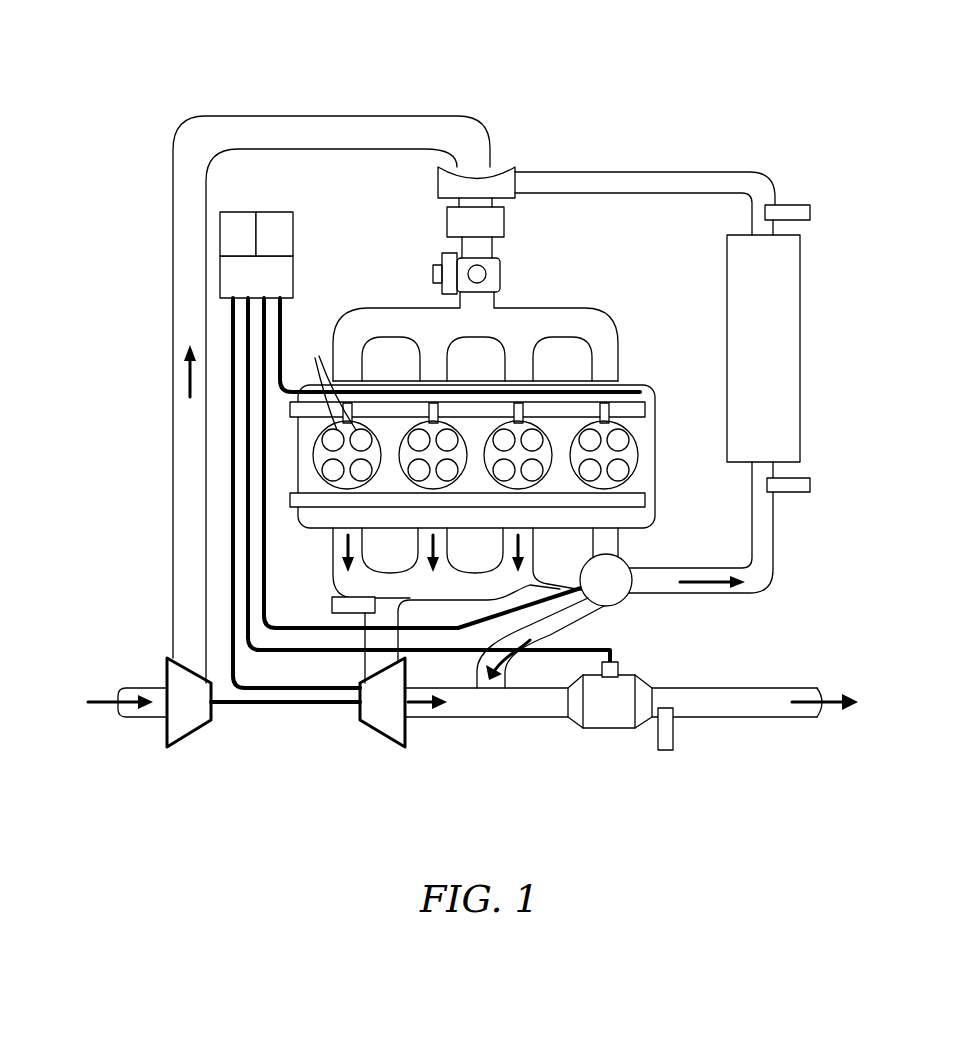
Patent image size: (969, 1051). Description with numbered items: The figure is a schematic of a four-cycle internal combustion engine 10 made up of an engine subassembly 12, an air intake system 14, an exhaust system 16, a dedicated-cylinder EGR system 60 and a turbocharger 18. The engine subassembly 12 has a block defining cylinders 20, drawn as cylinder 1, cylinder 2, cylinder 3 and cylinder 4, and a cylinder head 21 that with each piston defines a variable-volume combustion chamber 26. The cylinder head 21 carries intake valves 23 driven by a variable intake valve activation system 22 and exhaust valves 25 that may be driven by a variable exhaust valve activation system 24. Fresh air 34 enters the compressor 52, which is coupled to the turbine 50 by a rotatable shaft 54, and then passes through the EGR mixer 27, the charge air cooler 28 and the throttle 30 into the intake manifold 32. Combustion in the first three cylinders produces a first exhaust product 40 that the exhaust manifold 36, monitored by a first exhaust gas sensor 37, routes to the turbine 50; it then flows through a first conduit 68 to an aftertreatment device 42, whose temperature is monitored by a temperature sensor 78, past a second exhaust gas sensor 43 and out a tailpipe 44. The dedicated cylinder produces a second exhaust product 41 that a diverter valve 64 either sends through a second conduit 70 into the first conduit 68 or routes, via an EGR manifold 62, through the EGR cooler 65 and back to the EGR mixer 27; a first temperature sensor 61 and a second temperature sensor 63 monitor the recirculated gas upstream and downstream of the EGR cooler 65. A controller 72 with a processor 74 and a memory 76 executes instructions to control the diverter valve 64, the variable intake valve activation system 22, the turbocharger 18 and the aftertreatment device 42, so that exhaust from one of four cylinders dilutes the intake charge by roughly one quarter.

The cylinder 1 is at (366, 431).
The cylinder 2 is at (451, 431).
The cylinder 3 is at (537, 431).
The cylinder 4 is at (622, 431).
The internal combustion engine 10 is at (125, 68).
The engine subassembly 12 is at (432, 449).
The air intake system 14 is at (158, 138).
The exhaust system 16 is at (613, 739).
The turbocharger 18 is at (285, 735).
The cylinders 20 is at (362, 481).
The cylinder head 21 is at (660, 459).
The variable intake valve activation system 22 is at (283, 395).
The intake valves 23 is at (331, 384).
The variable exhaust valve activation system 24 is at (147, 718).
The exhaust valves 25 is at (336, 481).
The variable-volume combustion chamber 26 is at (305, 450).
The EGR mixer 27 is at (508, 167).
The charge air cooler 28 is at (505, 222).
The throttle 30 is at (501, 275).
The intake manifold 32 is at (592, 310).
The fresh air 34 is at (172, 370).
The exhaust manifold 36 is at (322, 675).
The first exhaust gas sensor 37 is at (345, 612).
The first exhaust product 40 is at (512, 585).
The second exhaust product 41 is at (707, 568).
The aftertreatment device 42 is at (612, 729).
The second exhaust gas sensor 43 is at (674, 735).
The tailpipe 44 is at (780, 718).
The turbine 50 is at (373, 733).
The compressor 52 is at (196, 733).
The rotatable shaft 54 is at (243, 705).
The dedicated-cylinder EGR system 60 is at (677, 451).
The first temperature sensor 61 is at (790, 493).
The EGR manifold 62 is at (620, 548).
The second temperature sensor 63 is at (790, 205).
The diverter valve 64 is at (650, 585).
The EGR cooler 65 is at (801, 282).
The first conduit 68 is at (413, 718).
The second conduit 70 is at (513, 668).
The controller 72 is at (256, 255).
The processor 74 is at (247, 248).
The memory 76 is at (283, 248).
The temperature sensor 78 is at (619, 668).